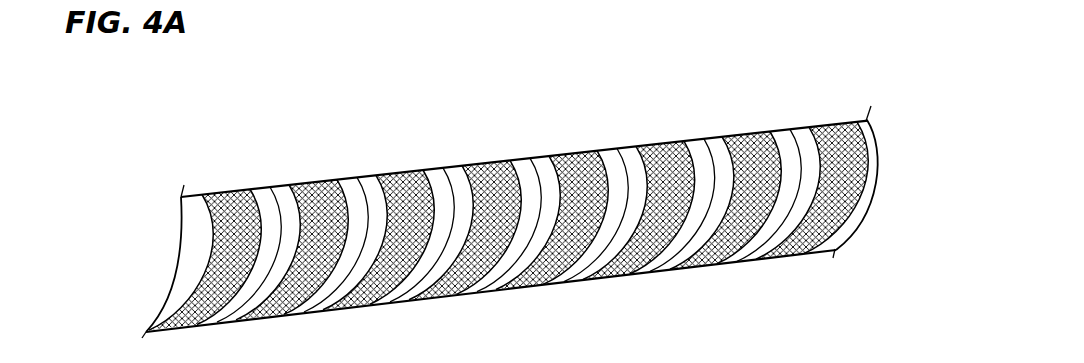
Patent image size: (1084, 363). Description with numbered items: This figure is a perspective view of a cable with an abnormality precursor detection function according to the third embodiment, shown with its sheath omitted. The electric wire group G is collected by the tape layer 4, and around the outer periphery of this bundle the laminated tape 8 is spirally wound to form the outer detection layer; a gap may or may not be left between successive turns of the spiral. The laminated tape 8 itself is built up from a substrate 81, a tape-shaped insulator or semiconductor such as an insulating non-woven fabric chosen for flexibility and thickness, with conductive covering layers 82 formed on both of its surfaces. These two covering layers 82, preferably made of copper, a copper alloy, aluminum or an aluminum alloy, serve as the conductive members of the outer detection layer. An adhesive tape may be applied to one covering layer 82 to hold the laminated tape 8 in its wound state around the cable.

The tape layer 4 is at (532, 170).
The laminated tape 8 is at (508, 209).
The substrate 81 is at (367, 175).
The covering layers 82 is at (397, 170).